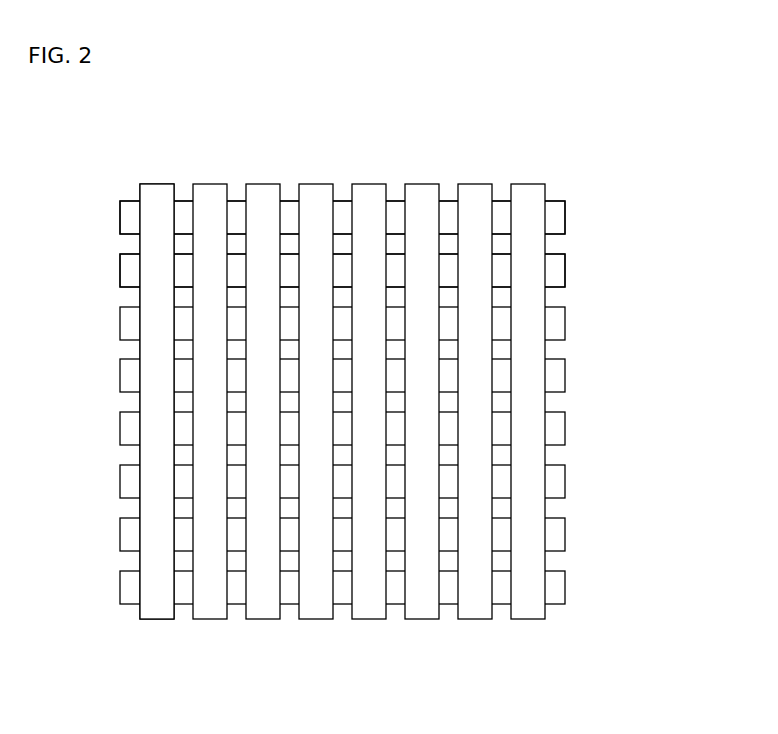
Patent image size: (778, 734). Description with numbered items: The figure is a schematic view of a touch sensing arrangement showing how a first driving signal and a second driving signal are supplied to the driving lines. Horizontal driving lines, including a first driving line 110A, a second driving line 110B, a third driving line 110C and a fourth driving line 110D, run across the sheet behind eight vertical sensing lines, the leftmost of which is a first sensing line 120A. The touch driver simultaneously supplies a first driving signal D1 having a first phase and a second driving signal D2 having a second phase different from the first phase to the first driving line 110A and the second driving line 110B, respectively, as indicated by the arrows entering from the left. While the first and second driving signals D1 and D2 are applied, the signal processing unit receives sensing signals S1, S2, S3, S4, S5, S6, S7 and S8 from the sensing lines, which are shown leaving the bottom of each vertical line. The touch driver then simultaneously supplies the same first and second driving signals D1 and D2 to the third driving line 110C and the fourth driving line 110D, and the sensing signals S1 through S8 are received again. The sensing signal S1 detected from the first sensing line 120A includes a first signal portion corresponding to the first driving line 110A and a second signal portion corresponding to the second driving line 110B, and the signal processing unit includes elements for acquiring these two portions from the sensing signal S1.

The first driving line 110A is at (565, 216).
The second driving line 110B is at (565, 269).
The third driving line 110C is at (565, 322).
The fourth driving line 110D is at (565, 374).
The first sensing line 120A is at (156, 182).
The first driving signal D1 is at (105, 217).
The second driving signal D2 is at (105, 270).
The sensing signal S1 is at (157, 625).
The sensing signal S2 is at (210, 625).
The sensing signal S3 is at (263, 625).
The sensing signal S4 is at (316, 625).
The sensing signal S5 is at (369, 625).
The sensing signal S6 is at (422, 625).
The sensing signal S7 is at (475, 625).
The sensing signal S8 is at (528, 625).